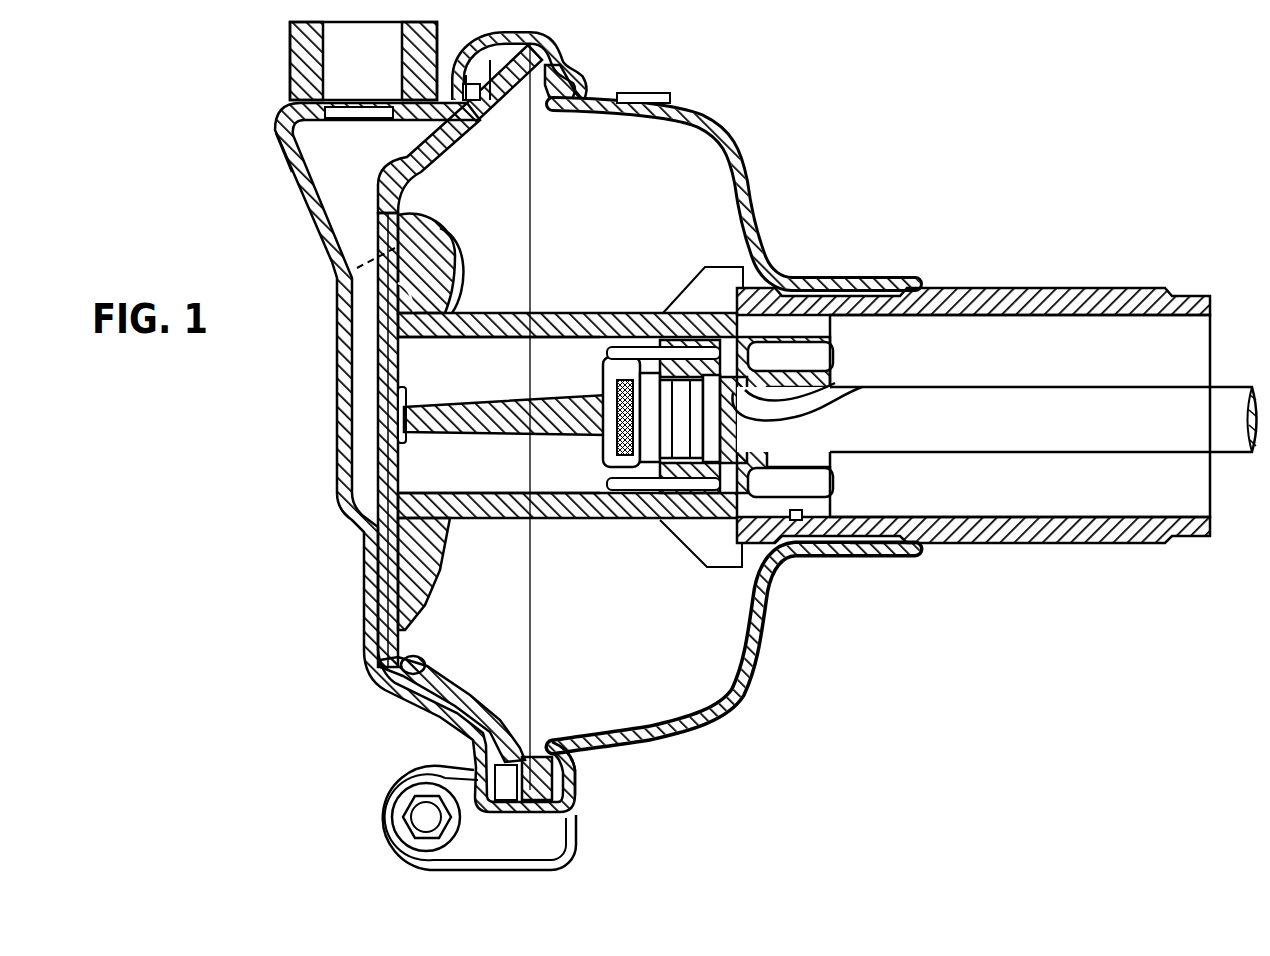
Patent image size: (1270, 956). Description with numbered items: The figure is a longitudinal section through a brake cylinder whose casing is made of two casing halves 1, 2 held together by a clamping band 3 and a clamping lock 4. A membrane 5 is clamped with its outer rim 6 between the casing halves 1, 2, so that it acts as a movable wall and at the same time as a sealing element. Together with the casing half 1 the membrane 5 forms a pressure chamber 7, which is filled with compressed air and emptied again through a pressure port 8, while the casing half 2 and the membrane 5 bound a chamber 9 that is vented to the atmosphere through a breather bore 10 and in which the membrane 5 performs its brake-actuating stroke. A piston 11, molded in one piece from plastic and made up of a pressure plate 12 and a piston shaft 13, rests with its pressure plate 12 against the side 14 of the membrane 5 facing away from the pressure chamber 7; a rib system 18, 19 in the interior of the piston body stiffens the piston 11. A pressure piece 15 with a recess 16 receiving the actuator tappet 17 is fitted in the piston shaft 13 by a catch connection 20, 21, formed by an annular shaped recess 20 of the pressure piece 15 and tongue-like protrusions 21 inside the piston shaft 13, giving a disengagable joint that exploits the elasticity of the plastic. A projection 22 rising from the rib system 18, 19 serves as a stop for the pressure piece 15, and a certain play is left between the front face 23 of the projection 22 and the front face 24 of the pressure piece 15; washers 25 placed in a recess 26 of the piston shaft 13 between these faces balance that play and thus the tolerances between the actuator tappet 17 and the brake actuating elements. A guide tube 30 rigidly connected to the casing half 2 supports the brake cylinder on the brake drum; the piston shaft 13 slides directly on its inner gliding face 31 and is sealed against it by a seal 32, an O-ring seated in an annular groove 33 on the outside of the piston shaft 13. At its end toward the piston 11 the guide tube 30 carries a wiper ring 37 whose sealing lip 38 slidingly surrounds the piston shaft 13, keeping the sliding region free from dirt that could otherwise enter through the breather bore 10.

The casing half 1 is at (313, 190).
The casing half 2 is at (717, 125).
The clamping band 3 is at (576, 782).
The clamping lock 4 is at (495, 850).
The membrane 5 is at (415, 715).
The outer rim 6 is at (570, 808).
The pressure chamber 7 is at (310, 146).
The pressure port 8 is at (297, 57).
The chamber 9 is at (572, 132).
The breather bore 10 is at (645, 110).
The piston 11 is at (577, 312).
The pressure plate 12 is at (428, 268).
The piston shaft 13 is at (488, 312).
The side 14 is at (390, 660).
The pressure piece 15 is at (858, 392).
The recess 16 is at (835, 388).
The actuator tappet 17 is at (1057, 397).
The rib system 18 is at (462, 410).
The rib system 19 is at (427, 463).
The annular shaped recess 20 is at (647, 318).
The protrusions 21 is at (665, 318).
The projection 22 is at (603, 445).
The front face 23 is at (607, 398).
The front face 24 is at (650, 465).
The washers 25 is at (643, 470).
The recess 26 is at (610, 312).
The guide tube 30 is at (937, 546).
The gliding face 31 is at (882, 523).
The seal 32 is at (800, 527).
The annular groove 33 is at (808, 486).
The wiper ring 37 is at (715, 293).
The sealing lip 38 is at (715, 565).